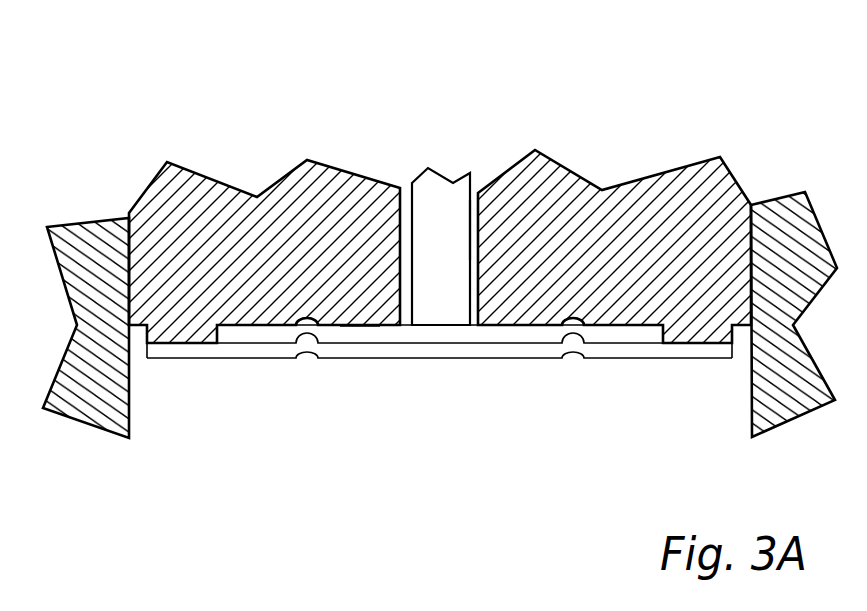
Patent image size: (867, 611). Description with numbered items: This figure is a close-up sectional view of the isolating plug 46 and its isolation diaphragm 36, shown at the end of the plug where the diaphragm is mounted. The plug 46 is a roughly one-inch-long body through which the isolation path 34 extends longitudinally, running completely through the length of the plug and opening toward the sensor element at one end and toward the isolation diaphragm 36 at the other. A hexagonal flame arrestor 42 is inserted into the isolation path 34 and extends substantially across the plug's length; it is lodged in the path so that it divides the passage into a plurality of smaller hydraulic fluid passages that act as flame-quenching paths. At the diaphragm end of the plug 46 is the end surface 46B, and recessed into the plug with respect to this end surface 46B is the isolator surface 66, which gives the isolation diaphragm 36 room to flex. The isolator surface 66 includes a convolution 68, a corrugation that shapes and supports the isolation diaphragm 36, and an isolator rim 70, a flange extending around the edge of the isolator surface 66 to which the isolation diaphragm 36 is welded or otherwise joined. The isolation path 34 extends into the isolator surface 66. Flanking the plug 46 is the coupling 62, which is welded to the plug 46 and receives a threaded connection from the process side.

The isolation path 34 is at (477, 232).
The isolation diaphragm 36 is at (403, 350).
The flame arrestor 42 is at (428, 215).
The plug 46 is at (192, 190).
The end surface 46B is at (618, 326).
The coupling 62 is at (88, 245).
The isolator surface 66 is at (352, 348).
The convolution 68 is at (307, 318).
The isolator rim 70 is at (163, 333).